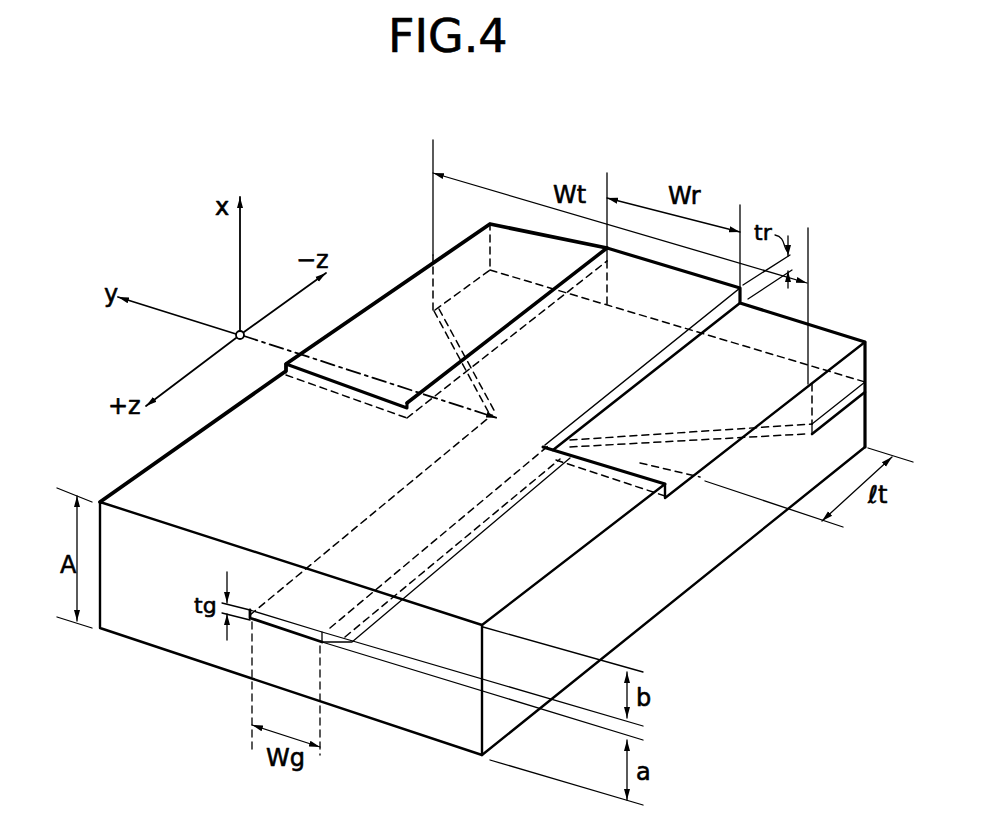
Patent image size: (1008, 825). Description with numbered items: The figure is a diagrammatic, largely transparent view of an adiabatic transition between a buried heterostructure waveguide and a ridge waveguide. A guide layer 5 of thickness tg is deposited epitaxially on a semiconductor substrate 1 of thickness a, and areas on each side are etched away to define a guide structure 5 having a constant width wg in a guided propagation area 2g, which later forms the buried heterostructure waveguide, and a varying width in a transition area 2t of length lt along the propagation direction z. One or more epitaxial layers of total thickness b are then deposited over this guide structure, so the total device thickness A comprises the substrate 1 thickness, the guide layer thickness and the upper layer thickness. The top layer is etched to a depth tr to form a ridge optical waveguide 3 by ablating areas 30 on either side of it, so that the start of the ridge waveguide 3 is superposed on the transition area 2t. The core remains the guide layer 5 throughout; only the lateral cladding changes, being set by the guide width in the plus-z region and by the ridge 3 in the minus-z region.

The substrate 1 is at (622, 598).
The ridge optical waveguide 3 is at (656, 332).
The guide layer 5 is at (372, 512).
The ablated areas 30 is at (387, 333).
The guided propagation area 2g is at (483, 542).
The transition area 2t is at (813, 442).